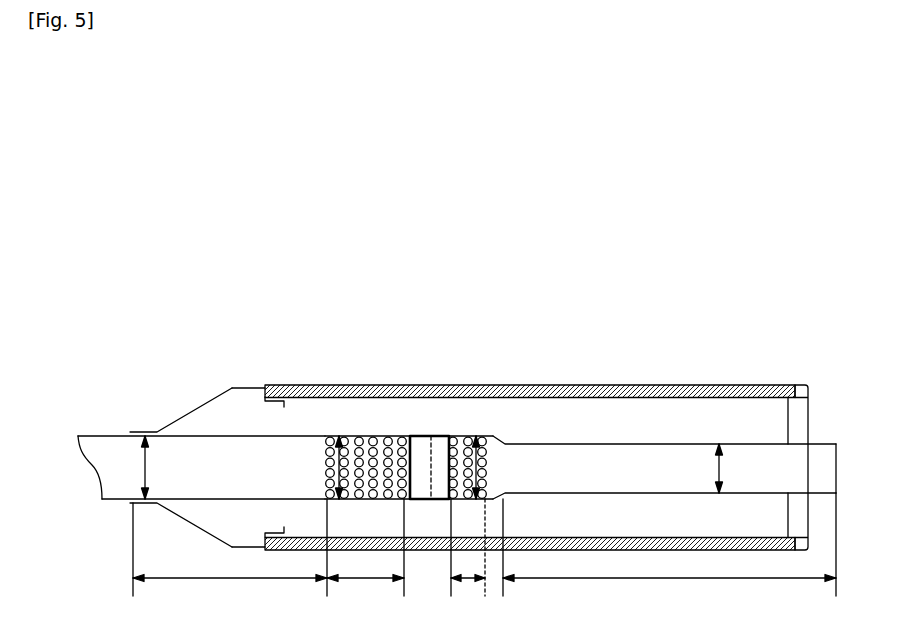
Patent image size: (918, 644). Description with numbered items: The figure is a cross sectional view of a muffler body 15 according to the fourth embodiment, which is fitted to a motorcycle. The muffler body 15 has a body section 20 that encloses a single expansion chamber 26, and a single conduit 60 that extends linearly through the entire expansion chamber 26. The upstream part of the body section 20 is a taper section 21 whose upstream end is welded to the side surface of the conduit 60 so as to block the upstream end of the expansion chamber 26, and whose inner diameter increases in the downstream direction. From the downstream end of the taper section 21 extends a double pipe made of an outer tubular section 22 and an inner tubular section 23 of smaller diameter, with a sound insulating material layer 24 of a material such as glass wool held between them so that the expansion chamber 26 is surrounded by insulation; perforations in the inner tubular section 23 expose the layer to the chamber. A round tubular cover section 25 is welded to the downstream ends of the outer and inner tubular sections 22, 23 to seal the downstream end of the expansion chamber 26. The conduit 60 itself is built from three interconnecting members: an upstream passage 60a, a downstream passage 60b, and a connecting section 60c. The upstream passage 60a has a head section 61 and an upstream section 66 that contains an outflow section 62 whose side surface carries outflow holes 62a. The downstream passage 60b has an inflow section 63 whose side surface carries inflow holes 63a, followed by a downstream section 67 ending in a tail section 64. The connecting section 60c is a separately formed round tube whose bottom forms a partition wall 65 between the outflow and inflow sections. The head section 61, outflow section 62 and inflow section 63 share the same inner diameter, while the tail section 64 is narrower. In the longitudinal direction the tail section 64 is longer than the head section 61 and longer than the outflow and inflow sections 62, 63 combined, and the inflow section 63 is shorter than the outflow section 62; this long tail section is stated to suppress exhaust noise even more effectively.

The muffler body 15 is at (413, 185).
The body section 20 is at (98, 258).
The taper section 21 is at (197, 409).
The outer tubular section 22 is at (288, 385).
The inner tubular section 23 is at (302, 385).
The sound insulating material layer 24 is at (317, 385).
The cover section 25 is at (823, 413).
The expansion chamber 26 is at (704, 423).
The conduit 60 is at (542, 252).
The upstream passage 60a is at (104, 433).
The downstream passage 60b is at (632, 444).
The connecting section 60c is at (435, 433).
The head section 61 is at (283, 436).
The outflow section 62 is at (373, 436).
The outflow holes 62a is at (358, 436).
The inflow section 63 is at (453, 436).
The inflow holes 63a is at (468, 436).
The tail section 64 is at (583, 444).
The partition wall 65 is at (413, 468).
The upstream section 66 is at (405, 294).
The downstream section 67 is at (577, 294).